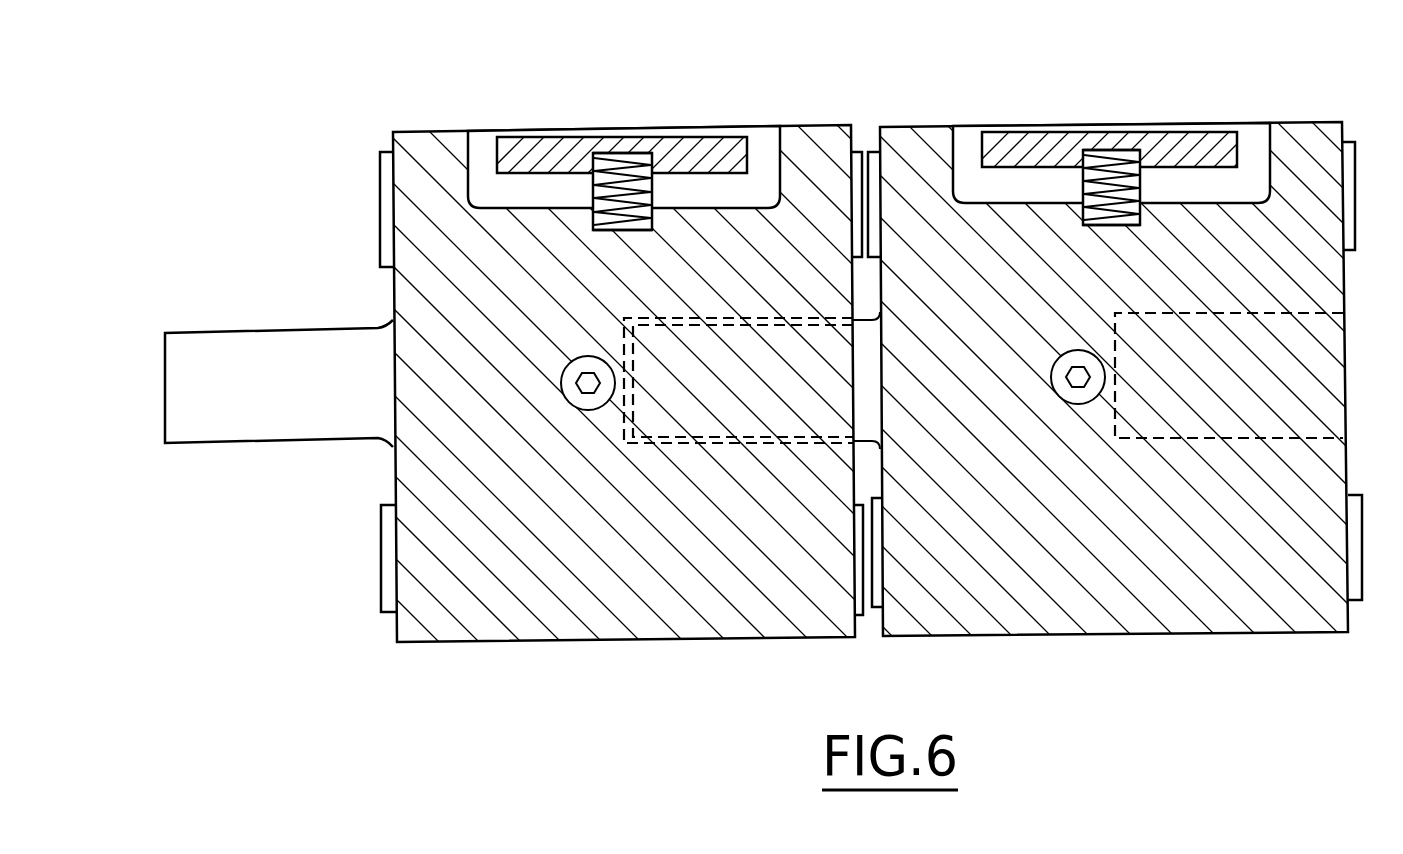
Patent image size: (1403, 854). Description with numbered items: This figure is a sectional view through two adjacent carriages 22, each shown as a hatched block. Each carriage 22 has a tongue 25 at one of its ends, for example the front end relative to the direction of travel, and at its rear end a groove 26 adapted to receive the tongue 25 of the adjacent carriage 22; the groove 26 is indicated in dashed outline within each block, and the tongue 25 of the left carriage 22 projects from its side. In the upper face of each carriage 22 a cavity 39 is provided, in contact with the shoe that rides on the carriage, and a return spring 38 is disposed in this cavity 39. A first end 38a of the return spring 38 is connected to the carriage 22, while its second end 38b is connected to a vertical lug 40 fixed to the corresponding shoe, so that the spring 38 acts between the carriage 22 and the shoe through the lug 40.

The carriage 22 is at (473, 603).
The tongue 25 is at (195, 352).
The groove 26 is at (683, 443).
The return spring 38 is at (662, 185).
The first end 38a is at (645, 231).
The second end 38b is at (613, 153).
The cavity 39 is at (765, 152).
The vertical lug 40 is at (520, 148).